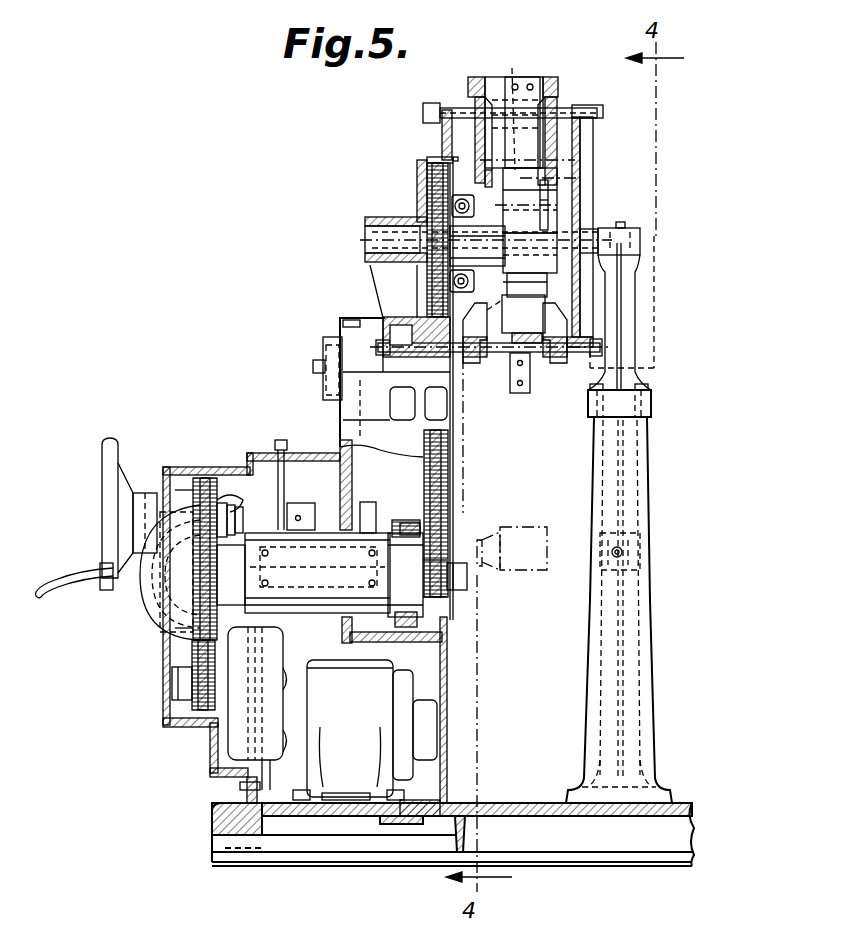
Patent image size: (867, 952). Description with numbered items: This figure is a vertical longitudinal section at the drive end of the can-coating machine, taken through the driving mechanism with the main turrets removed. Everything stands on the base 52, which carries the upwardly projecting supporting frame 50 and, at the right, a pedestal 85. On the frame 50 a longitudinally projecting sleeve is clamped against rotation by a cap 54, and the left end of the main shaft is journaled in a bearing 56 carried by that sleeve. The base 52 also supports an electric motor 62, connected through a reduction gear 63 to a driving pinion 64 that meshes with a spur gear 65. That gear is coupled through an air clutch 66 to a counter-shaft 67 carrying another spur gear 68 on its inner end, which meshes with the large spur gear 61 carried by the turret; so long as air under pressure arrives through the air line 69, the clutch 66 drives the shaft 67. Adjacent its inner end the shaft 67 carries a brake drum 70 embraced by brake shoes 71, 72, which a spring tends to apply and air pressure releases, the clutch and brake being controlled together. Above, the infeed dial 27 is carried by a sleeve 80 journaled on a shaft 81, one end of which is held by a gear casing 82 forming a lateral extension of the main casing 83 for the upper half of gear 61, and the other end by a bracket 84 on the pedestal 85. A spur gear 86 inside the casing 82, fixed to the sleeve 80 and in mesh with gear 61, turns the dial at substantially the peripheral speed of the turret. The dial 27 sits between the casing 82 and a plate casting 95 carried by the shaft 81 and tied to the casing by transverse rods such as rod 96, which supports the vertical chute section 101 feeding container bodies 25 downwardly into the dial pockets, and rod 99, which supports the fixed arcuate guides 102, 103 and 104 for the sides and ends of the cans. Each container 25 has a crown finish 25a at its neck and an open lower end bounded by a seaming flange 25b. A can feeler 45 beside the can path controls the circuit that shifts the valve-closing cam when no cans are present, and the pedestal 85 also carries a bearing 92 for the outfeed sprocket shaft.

The container body 25 is at (690, 268).
The crown finish 25a is at (487, 528).
The seaming flange 25b is at (547, 528).
The infeed dial 27 is at (544, 200).
The can feeler 45 is at (555, 355).
The supporting frame 50 is at (345, 430).
The base 52 is at (690, 818).
The cap 54 is at (345, 318).
The bearing 56 is at (333, 350).
The large spur gear 61 is at (447, 463).
The electric motor 62 is at (370, 706).
The reduction gear 63 is at (272, 680).
The driving pinion 64 is at (203, 697).
The spur gear 65 is at (200, 640).
The air clutch 66 is at (145, 605).
The counter-shaft 67 is at (333, 520).
The spur gear 68 is at (455, 578).
The air line 69 is at (63, 578).
The brake drum 70 is at (376, 522).
The brake shoe 71 is at (396, 518).
The brake shoe 72 is at (432, 628).
The sleeve 80 is at (527, 215).
The shaft 81 is at (380, 240).
The gear casing 82 is at (447, 130).
The main casing 83 is at (432, 185).
The bracket 84 is at (625, 313).
The pedestal 85 is at (640, 484).
The spur gear 86 is at (437, 208).
The bearing 92 is at (632, 541).
The plate casting 95 is at (577, 152).
The transverse rod 96 is at (466, 107).
The transverse rod 99 is at (500, 360).
The chute section 101 is at (545, 82).
The side wall guide 102 is at (528, 370).
The arcuate guide 103 is at (560, 317).
The arcuate guide 104 is at (490, 367).